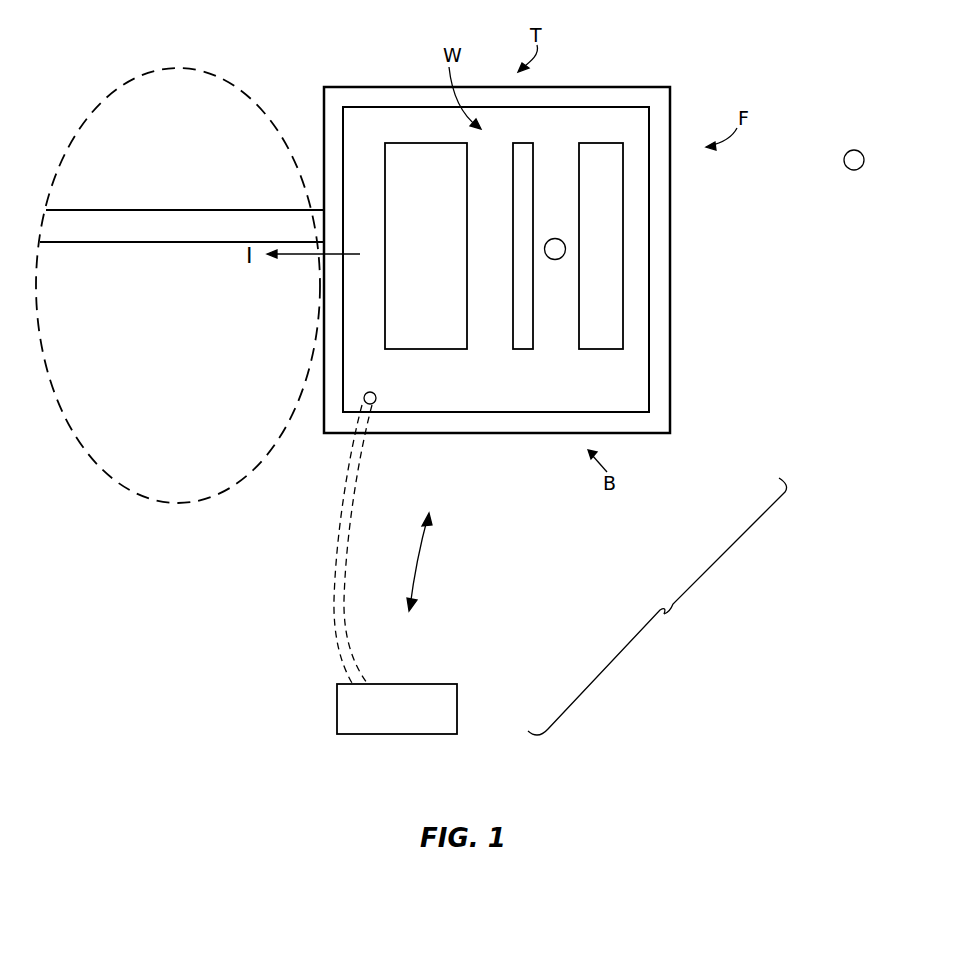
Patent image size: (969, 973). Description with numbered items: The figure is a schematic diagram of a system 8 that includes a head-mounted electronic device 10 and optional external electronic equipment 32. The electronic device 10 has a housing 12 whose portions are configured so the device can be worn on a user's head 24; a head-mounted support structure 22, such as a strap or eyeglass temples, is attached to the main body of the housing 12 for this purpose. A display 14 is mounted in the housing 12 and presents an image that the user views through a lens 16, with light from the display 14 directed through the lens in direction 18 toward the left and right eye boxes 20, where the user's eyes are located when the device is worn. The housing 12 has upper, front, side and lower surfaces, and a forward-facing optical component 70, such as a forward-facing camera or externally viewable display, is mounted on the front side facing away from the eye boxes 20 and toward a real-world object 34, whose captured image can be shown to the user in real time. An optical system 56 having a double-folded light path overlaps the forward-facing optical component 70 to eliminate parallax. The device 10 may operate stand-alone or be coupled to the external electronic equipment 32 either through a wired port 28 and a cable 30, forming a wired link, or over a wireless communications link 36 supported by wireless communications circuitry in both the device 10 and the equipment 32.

The system 8 is at (657, 606).
The electronic device 10 is at (700, 86).
The housing 12 is at (630, 85).
The display 14 is at (522, 349).
The lens 16 is at (426, 349).
The direction 18 is at (299, 258).
The eye boxes 20 is at (247, 262).
The head-mounted support structure 22 is at (135, 233).
The user's head 24 is at (236, 86).
The port 28 is at (374, 392).
The cable 30 is at (353, 523).
The external electronic equipment 32 is at (403, 722).
The real-world object 34 is at (862, 152).
The wireless communications link 36 is at (422, 568).
The optical system 56 is at (595, 157).
The forward-facing optical component 70 is at (555, 260).